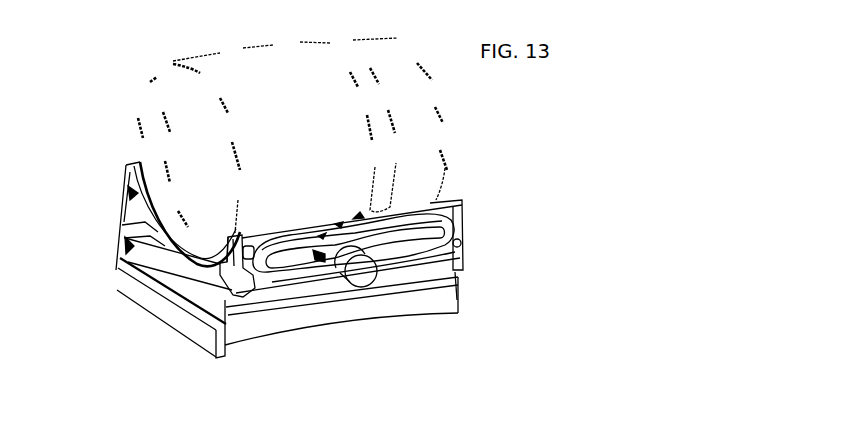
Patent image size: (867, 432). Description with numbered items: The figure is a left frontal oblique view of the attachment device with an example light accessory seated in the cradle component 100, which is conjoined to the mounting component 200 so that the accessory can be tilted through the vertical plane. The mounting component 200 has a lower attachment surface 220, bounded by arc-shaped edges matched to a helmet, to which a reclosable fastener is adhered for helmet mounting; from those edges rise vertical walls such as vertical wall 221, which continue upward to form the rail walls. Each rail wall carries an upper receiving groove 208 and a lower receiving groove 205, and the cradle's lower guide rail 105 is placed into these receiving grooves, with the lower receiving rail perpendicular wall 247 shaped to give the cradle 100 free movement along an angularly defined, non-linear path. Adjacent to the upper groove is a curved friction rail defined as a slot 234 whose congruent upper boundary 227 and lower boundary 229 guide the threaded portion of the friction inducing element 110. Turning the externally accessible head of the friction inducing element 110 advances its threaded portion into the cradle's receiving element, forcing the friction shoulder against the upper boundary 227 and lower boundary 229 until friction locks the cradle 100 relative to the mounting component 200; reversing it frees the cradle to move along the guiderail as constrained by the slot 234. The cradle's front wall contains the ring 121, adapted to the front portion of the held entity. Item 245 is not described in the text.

The cradle component 100 is at (487, 235).
The lower guide rail 105 is at (98, 222).
The friction inducing element 110 is at (324, 313).
The ring 121 is at (133, 214).
The mounting component 200 is at (370, 316).
The lower receiving groove 205 is at (165, 279).
The upper receiving groove 208 is at (143, 200).
The lower attachment surface 220 is at (148, 309).
The vertical wall 221 is at (380, 249).
The upper boundary 227 is at (314, 297).
The lower boundary 229 is at (315, 323).
The slot 234 is at (310, 318).
The base lower edge 245 is at (136, 320).
The lower receiving rail perpendicular wall 247 is at (151, 318).